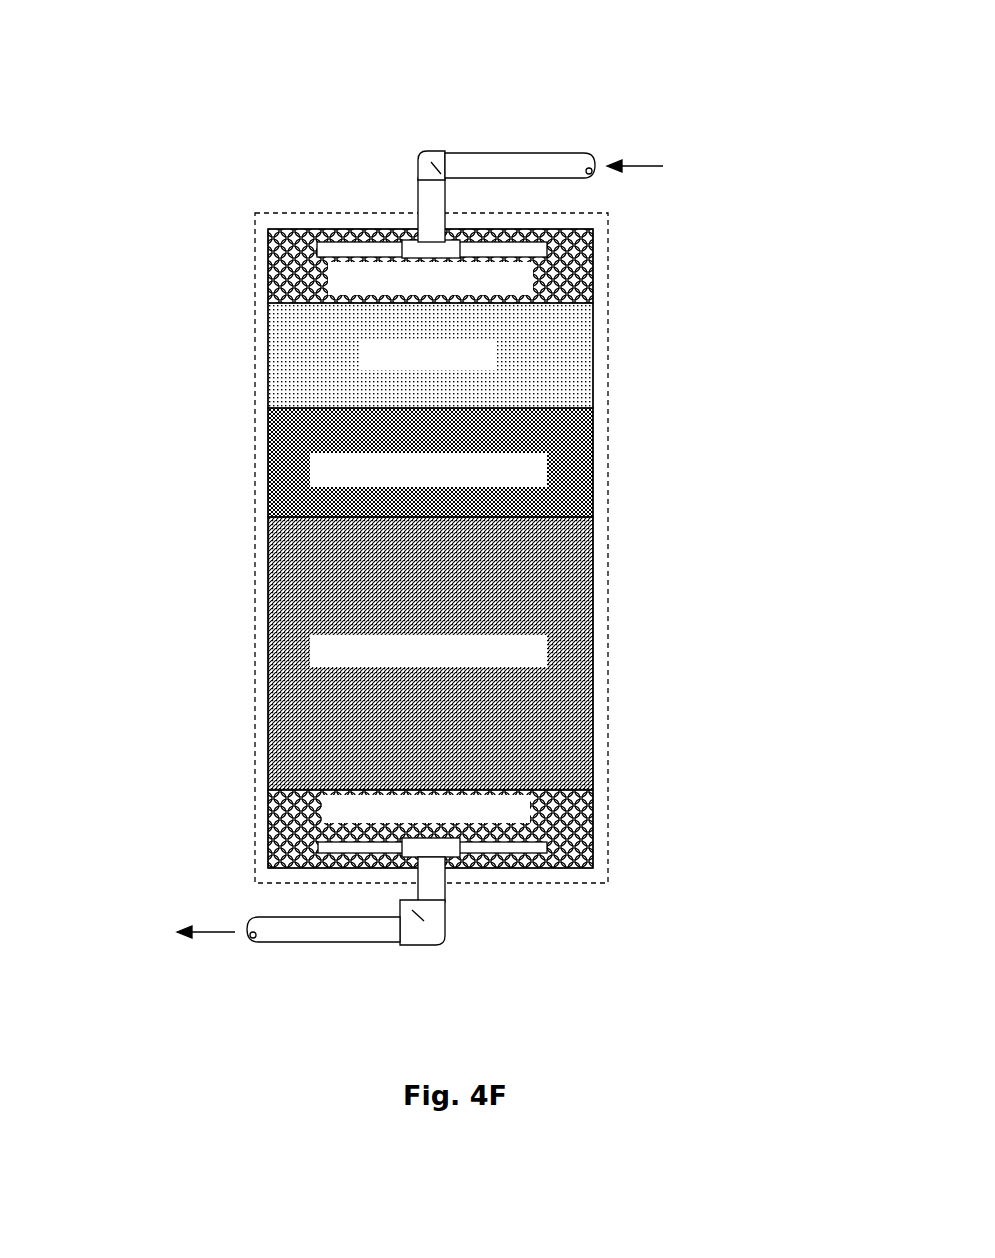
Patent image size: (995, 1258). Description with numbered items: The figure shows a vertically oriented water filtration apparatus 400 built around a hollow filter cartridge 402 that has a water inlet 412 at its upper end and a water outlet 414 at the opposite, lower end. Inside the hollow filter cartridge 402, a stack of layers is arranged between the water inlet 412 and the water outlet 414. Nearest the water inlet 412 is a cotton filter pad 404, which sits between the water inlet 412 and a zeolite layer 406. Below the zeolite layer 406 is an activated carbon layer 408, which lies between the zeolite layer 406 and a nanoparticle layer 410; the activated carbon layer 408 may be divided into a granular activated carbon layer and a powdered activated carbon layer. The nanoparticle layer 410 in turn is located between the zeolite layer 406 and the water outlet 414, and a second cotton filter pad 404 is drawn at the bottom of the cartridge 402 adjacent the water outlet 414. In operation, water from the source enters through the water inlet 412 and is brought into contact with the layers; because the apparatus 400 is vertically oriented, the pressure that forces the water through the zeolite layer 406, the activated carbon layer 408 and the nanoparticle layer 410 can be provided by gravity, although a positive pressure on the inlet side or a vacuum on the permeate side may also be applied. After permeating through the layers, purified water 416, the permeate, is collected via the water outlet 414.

The water filtration apparatus 400 is at (190, 58).
The hollow filter cartridge 402 is at (612, 855).
The cotton filter pad 404 is at (268, 262).
The zeolite layer 406 is at (268, 353).
The activated carbon layer 408 is at (268, 453).
The nanoparticle layer 410 is at (268, 623).
The water inlet 412 is at (522, 145).
The water outlet 414 is at (307, 945).
The purified water 416 is at (197, 945).